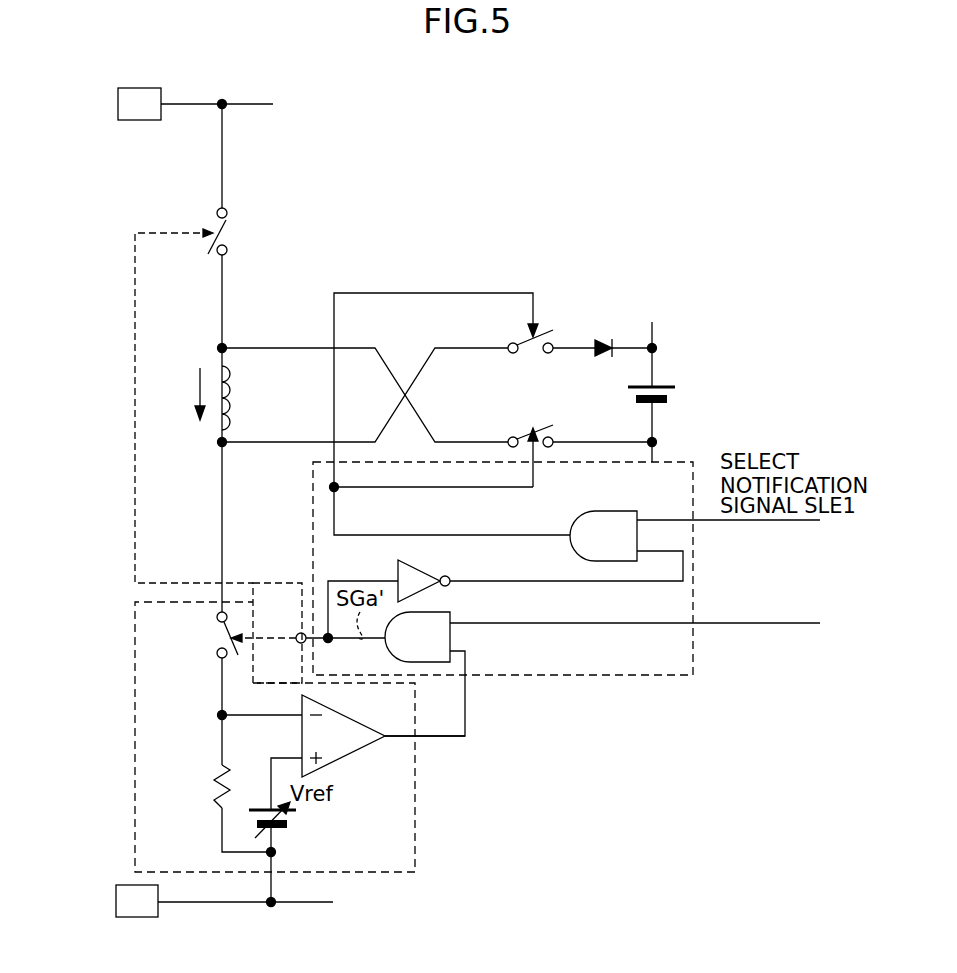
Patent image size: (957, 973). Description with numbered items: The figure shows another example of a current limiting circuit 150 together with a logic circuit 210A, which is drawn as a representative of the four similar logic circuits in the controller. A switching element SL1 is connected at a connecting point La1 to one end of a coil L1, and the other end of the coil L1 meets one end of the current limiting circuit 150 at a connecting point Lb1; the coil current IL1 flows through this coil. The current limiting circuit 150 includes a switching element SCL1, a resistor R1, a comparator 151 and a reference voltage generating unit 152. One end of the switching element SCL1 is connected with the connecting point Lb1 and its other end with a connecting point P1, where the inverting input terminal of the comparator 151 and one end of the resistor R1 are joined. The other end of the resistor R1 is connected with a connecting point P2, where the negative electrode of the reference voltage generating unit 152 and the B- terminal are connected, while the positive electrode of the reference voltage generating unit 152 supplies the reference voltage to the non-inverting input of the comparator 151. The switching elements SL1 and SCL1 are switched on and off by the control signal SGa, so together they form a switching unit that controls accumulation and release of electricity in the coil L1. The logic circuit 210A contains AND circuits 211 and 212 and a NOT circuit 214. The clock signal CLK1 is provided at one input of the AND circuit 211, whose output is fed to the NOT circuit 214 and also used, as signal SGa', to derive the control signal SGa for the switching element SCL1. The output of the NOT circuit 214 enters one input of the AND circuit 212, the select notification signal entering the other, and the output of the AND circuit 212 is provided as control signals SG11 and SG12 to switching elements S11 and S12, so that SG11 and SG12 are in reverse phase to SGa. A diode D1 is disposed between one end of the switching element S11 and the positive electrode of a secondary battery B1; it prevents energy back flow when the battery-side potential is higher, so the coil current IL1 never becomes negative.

The current limiting circuit 150 is at (417, 812).
The comparator 151 is at (348, 704).
The reference voltage generating unit 152 is at (290, 826).
The logic circuit 210A is at (695, 568).
The AND circuit 211 is at (432, 616).
The AND circuit 212 is at (619, 513).
The NOT circuit 214 is at (427, 570).
The switching element SL1 is at (216, 234).
The control signal SGa is at (275, 636).
The switching element SCL1 is at (228, 635).
The coil L1 is at (236, 394).
The coil current IL1 is at (183, 394).
The connecting point La1 is at (218, 348).
The connecting point Lb1 is at (218, 442).
The control signal SG11 is at (436, 294).
The control signal SG12 is at (432, 487).
The switching element S11 is at (536, 356).
The switching element S12 is at (550, 431).
The diode D1 is at (598, 340).
The secondary battery B1 is at (670, 392).
The clock signal CLK1 is at (635, 610).
The connecting point P1 is at (218, 715).
The connecting point P2 is at (278, 852).
The resistor R1 is at (206, 786).
The B− terminal B- is at (114, 902).